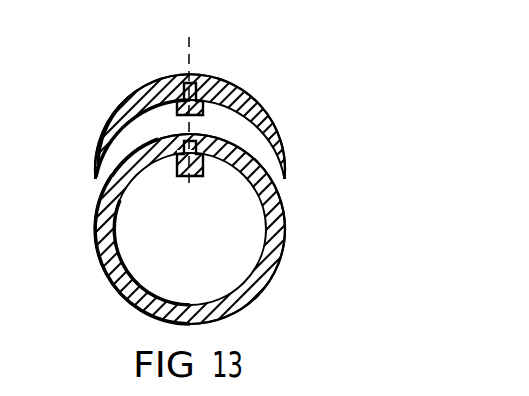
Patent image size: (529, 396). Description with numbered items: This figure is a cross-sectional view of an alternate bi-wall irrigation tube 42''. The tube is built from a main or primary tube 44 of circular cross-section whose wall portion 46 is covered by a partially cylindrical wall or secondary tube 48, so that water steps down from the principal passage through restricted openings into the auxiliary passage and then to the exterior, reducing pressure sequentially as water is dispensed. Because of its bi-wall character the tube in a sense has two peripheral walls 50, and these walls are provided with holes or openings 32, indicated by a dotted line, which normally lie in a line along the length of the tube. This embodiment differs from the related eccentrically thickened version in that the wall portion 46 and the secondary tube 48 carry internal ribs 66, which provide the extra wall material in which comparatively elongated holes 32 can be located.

The hole 32 is at (173, 77).
The irrigation tube 42'' is at (230, 195).
The primary tube 44 is at (267, 291).
The wall portion 46 is at (152, 164).
The secondary tube 48 is at (117, 109).
The peripheral wall 50 is at (97, 277).
The internal rib 66 is at (228, 160).